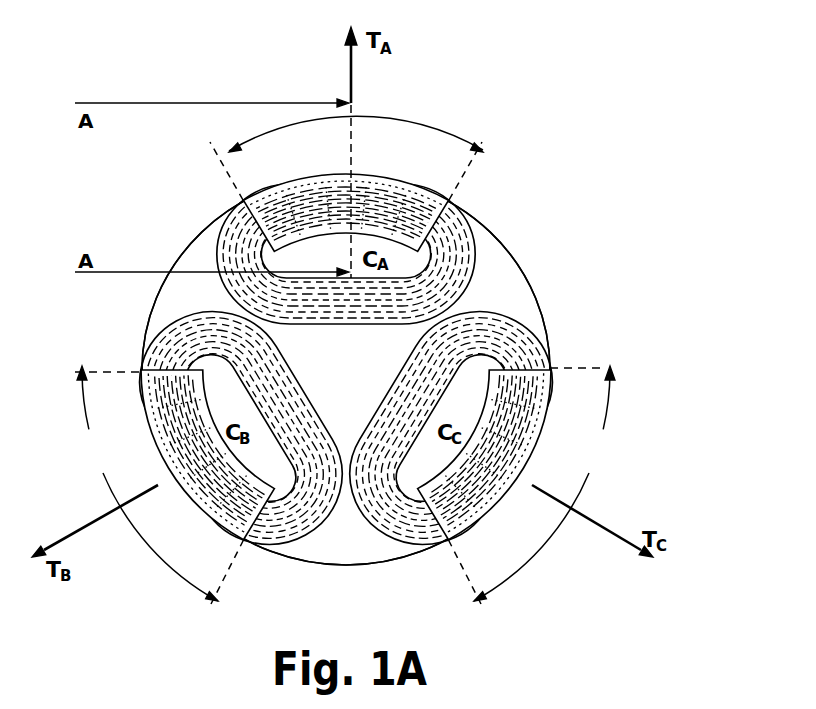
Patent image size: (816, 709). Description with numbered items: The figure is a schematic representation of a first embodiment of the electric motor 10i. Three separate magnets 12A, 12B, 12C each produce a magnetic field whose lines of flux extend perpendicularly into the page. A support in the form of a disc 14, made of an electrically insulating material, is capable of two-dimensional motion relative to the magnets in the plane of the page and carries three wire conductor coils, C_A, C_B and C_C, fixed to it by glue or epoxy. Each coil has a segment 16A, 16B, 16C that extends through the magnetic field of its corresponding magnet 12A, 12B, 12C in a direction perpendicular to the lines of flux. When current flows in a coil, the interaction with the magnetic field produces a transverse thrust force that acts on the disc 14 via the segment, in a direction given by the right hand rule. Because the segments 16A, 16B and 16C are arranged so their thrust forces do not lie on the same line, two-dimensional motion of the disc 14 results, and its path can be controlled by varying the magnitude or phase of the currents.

The electric motor 10i is at (533, 214).
The magnet 12A is at (462, 181).
The magnet 12B is at (197, 528).
The magnet 12C is at (547, 402).
The disc 14 is at (507, 300).
The segment 16A is at (346, 158).
The segment 16B is at (157, 485).
The segment 16C is at (542, 485).